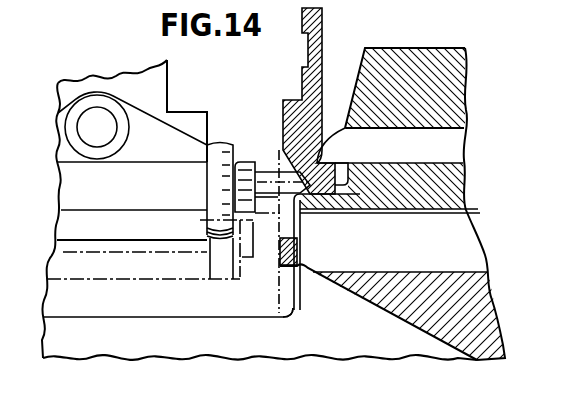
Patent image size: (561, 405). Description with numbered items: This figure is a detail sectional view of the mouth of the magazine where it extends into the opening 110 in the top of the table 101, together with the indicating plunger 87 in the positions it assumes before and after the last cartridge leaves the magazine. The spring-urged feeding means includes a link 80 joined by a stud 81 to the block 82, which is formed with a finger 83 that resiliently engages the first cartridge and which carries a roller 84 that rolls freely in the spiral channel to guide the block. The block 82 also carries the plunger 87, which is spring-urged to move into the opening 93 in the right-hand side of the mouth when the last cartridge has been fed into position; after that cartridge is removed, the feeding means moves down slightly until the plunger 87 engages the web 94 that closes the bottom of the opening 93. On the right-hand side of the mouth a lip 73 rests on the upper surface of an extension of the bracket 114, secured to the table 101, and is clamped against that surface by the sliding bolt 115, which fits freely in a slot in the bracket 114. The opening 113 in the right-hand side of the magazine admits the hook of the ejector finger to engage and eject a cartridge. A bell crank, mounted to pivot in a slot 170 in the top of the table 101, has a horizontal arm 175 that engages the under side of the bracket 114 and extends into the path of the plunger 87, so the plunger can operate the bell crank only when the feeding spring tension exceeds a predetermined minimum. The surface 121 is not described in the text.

The link 80 is at (121, 72).
The stud 81 is at (70, 132).
The block 82 is at (70, 183).
The finger 83 is at (70, 222).
The roller 84 is at (212, 179).
The plunger 87 is at (269, 163).
The opening 93 is at (280, 160).
The web 94 is at (281, 262).
The opening 110 is at (297, 262).
The opening 113 is at (280, 306).
The bracket 114 is at (406, 57).
The sliding bolt 115 is at (348, 126).
The lip 73 is at (325, 163).
The horizontal arm 175 is at (432, 213).
The slot 170 is at (359, 272).
The inclined surface 121 is at (391, 315).
The table 101 is at (487, 348).